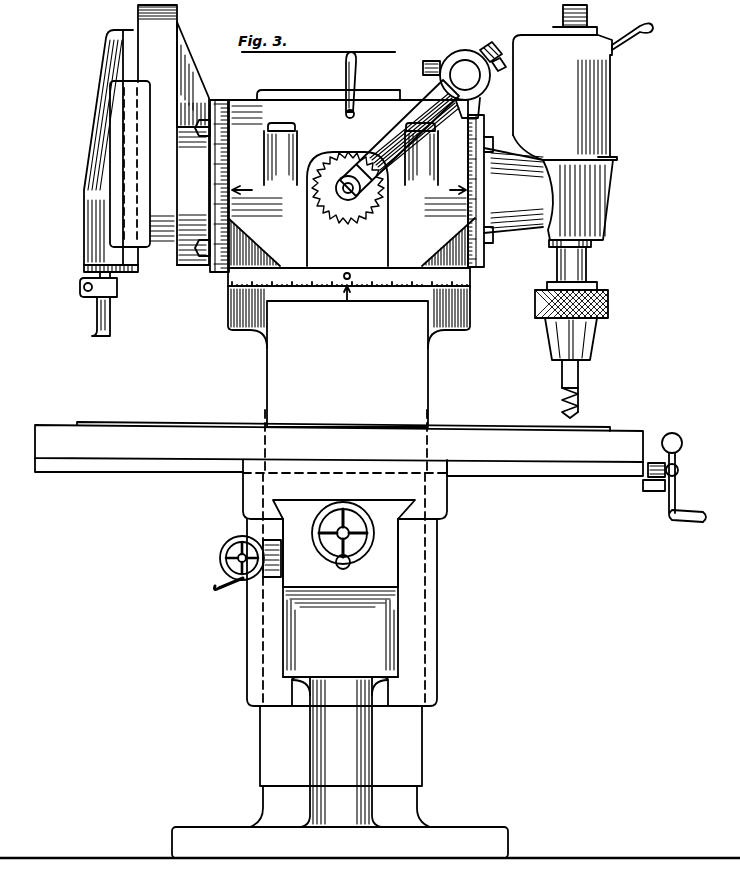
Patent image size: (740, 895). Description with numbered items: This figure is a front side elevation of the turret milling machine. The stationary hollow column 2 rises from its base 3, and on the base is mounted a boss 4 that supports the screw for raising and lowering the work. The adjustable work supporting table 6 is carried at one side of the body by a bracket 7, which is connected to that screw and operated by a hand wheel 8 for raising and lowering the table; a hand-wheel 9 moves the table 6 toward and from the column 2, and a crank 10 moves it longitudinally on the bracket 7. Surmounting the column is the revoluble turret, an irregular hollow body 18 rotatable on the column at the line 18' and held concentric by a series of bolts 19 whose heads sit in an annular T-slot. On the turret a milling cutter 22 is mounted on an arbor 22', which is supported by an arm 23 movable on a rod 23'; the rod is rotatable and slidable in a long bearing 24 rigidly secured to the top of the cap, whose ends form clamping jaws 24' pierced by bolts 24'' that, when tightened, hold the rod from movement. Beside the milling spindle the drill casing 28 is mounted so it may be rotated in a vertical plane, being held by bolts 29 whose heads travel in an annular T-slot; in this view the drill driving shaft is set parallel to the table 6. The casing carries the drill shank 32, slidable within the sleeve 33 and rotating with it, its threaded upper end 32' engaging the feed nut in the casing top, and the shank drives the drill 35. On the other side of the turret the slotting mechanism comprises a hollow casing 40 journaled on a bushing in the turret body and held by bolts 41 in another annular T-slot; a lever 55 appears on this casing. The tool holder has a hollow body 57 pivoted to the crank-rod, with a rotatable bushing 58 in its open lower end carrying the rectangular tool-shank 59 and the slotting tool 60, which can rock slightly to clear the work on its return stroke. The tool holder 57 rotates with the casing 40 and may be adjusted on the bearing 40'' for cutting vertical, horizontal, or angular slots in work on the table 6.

The stationary hollow column 2 is at (347, 364).
The base 3 is at (340, 842).
The boss 4 is at (340, 752).
The adjustable work supporting table 6 is at (339, 443).
The bracket 7 is at (345, 583).
The hand wheel 8 is at (237, 583).
The hand-wheel 9 is at (351, 562).
The crank 10 is at (666, 516).
The turret body 18 is at (351, 179).
The turret rotation line 18' is at (333, 308).
The bolts 19 is at (287, 128).
The milling cutter 22 is at (348, 201).
The arbor 22' is at (337, 209).
The arbor support arm 23 is at (399, 138).
The rod 23' is at (465, 75).
The bearing 24 is at (480, 108).
The clamping jaws 24' is at (415, 68).
The bolts 24'' is at (467, 54).
The drill casing 28 is at (583, 131).
The bolts 29 is at (497, 172).
The drill shank 32 is at (574, 303).
The threaded end of drill shank 32' is at (574, 20).
The sleeve 33 is at (552, 248).
The drill 35 is at (580, 386).
The hollow casing 40 is at (173, 135).
The bearing 40'' is at (231, 169).
The bolts 41 is at (204, 96).
The lever 55 is at (346, 74).
The hollow body 57 is at (84, 201).
The bushing 58 is at (80, 276).
The tool-shank 59 is at (117, 287).
The slotting tool 60 is at (110, 321).